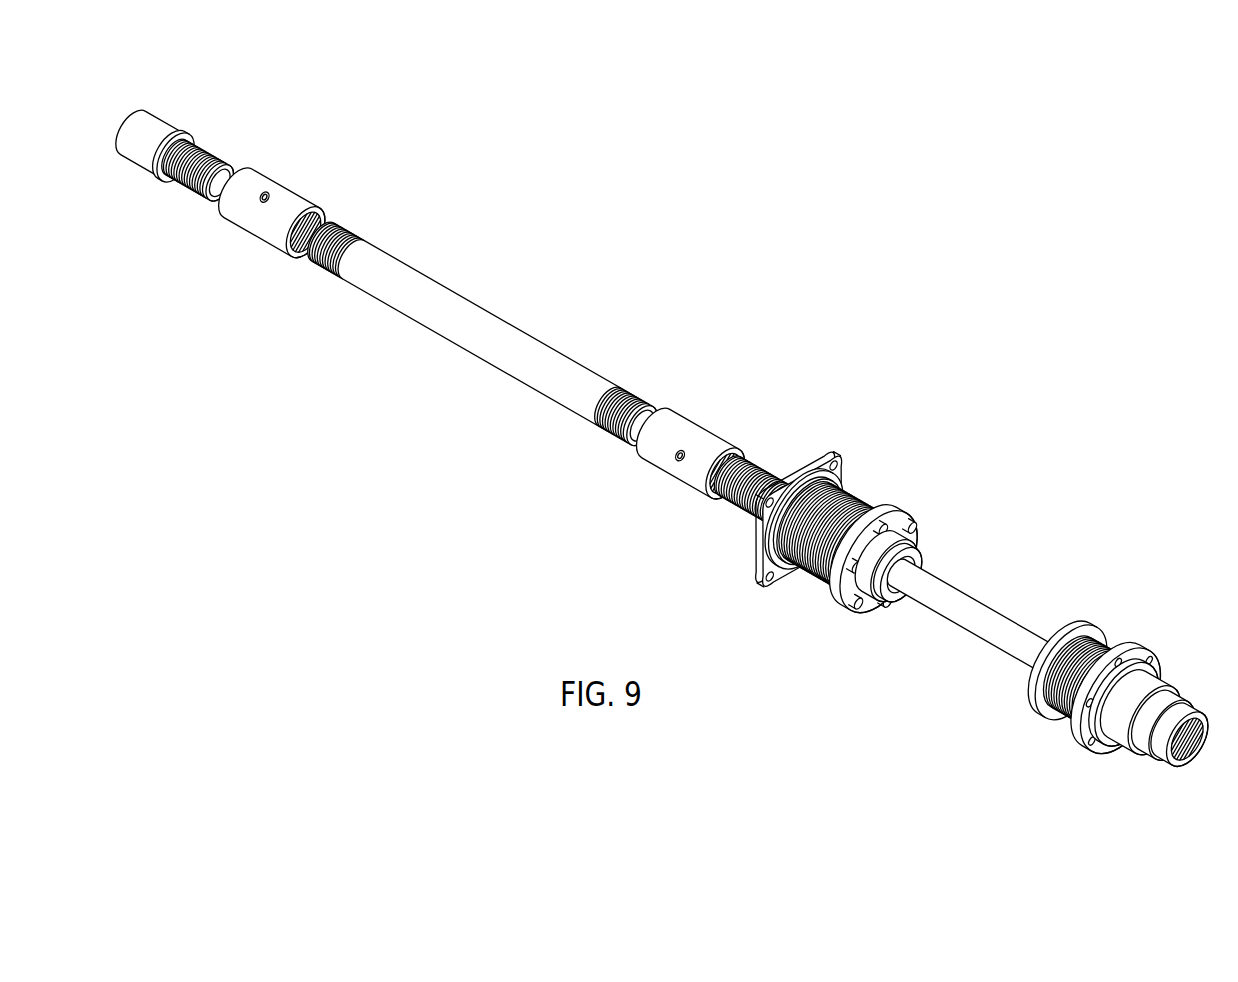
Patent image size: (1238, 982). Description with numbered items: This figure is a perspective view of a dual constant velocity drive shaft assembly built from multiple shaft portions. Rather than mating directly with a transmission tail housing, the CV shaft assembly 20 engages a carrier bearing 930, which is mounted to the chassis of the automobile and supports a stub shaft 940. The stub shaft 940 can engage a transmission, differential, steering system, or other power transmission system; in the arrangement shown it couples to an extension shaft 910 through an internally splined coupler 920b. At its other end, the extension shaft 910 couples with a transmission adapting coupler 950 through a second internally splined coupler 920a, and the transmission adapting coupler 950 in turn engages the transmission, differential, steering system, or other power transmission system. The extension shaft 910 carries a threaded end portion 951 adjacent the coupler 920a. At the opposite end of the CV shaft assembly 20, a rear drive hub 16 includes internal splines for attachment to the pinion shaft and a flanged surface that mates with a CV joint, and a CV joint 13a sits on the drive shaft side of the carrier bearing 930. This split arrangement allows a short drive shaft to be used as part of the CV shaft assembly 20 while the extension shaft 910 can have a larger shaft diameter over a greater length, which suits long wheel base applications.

The transmission adapting coupler 950 is at (180, 137).
The threaded portion 951 is at (194, 196).
The internally splined coupler 920a is at (289, 196).
The extension shaft 910 is at (452, 306).
The internally splined coupler 920b is at (683, 431).
The stub shaft 940 is at (775, 468).
The carrier bearing 930 is at (837, 448).
The bearing housing 13a is at (821, 597).
The CV shaft assembly 20 is at (888, 479).
The rear drive hub 16 is at (1120, 757).